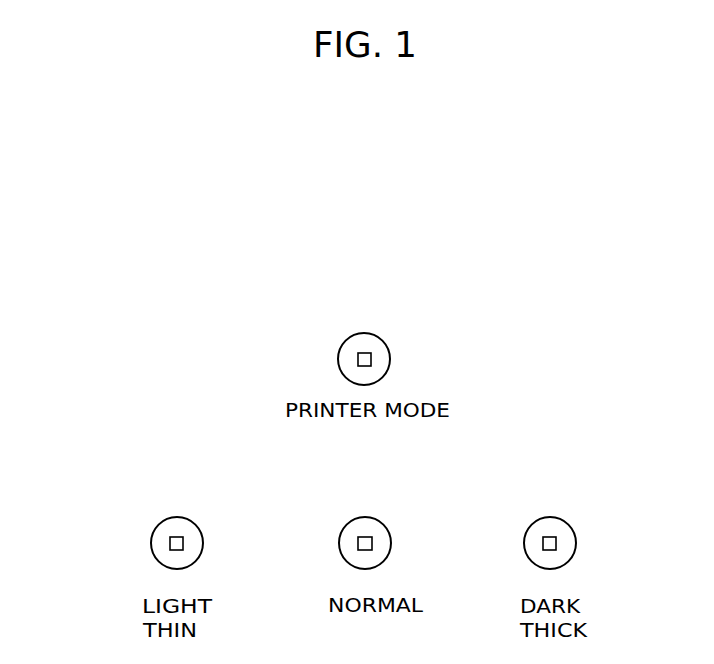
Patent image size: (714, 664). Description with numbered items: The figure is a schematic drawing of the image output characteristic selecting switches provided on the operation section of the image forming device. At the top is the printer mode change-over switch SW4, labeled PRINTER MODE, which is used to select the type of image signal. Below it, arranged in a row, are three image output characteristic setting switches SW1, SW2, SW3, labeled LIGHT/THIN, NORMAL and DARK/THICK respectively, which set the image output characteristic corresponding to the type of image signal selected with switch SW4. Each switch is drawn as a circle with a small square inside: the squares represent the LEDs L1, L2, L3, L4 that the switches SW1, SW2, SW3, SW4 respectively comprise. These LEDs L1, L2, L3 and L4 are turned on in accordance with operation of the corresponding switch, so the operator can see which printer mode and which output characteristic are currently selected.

The image output characteristic setting switch SW1 is at (148, 548).
The image output characteristic setting switch SW2 is at (337, 542).
The image output characteristic setting switch SW3 is at (580, 538).
The printer mode change-over switch SW4 is at (390, 337).
The LED L1 is at (173, 534).
The LED L2 is at (373, 542).
The LED L3 is at (553, 533).
The LED L4 is at (352, 353).